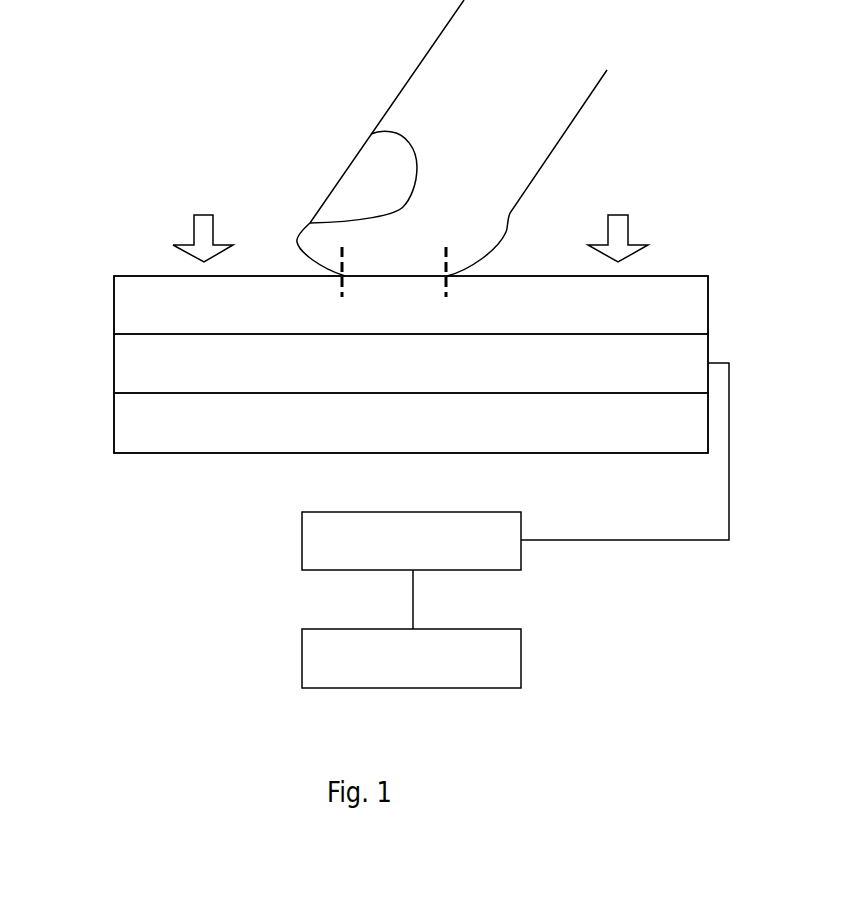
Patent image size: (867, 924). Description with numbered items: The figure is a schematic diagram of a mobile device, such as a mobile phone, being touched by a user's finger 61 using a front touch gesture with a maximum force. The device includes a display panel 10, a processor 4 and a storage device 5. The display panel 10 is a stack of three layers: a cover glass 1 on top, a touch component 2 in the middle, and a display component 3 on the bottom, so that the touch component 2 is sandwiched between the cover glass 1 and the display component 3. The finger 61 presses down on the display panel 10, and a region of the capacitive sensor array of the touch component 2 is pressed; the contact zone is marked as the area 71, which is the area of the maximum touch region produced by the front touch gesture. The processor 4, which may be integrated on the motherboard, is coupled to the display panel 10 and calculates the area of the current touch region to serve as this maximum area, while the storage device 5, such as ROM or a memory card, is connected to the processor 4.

The finger 61 is at (508, 122).
The area of the maximum touch region 71 is at (446, 268).
The display panel 10 is at (97, 290).
The cover glass 1 is at (395, 321).
The touch component 2 is at (395, 378).
The display component 3 is at (395, 434).
The processor 4 is at (522, 523).
The storage device 5 is at (522, 639).